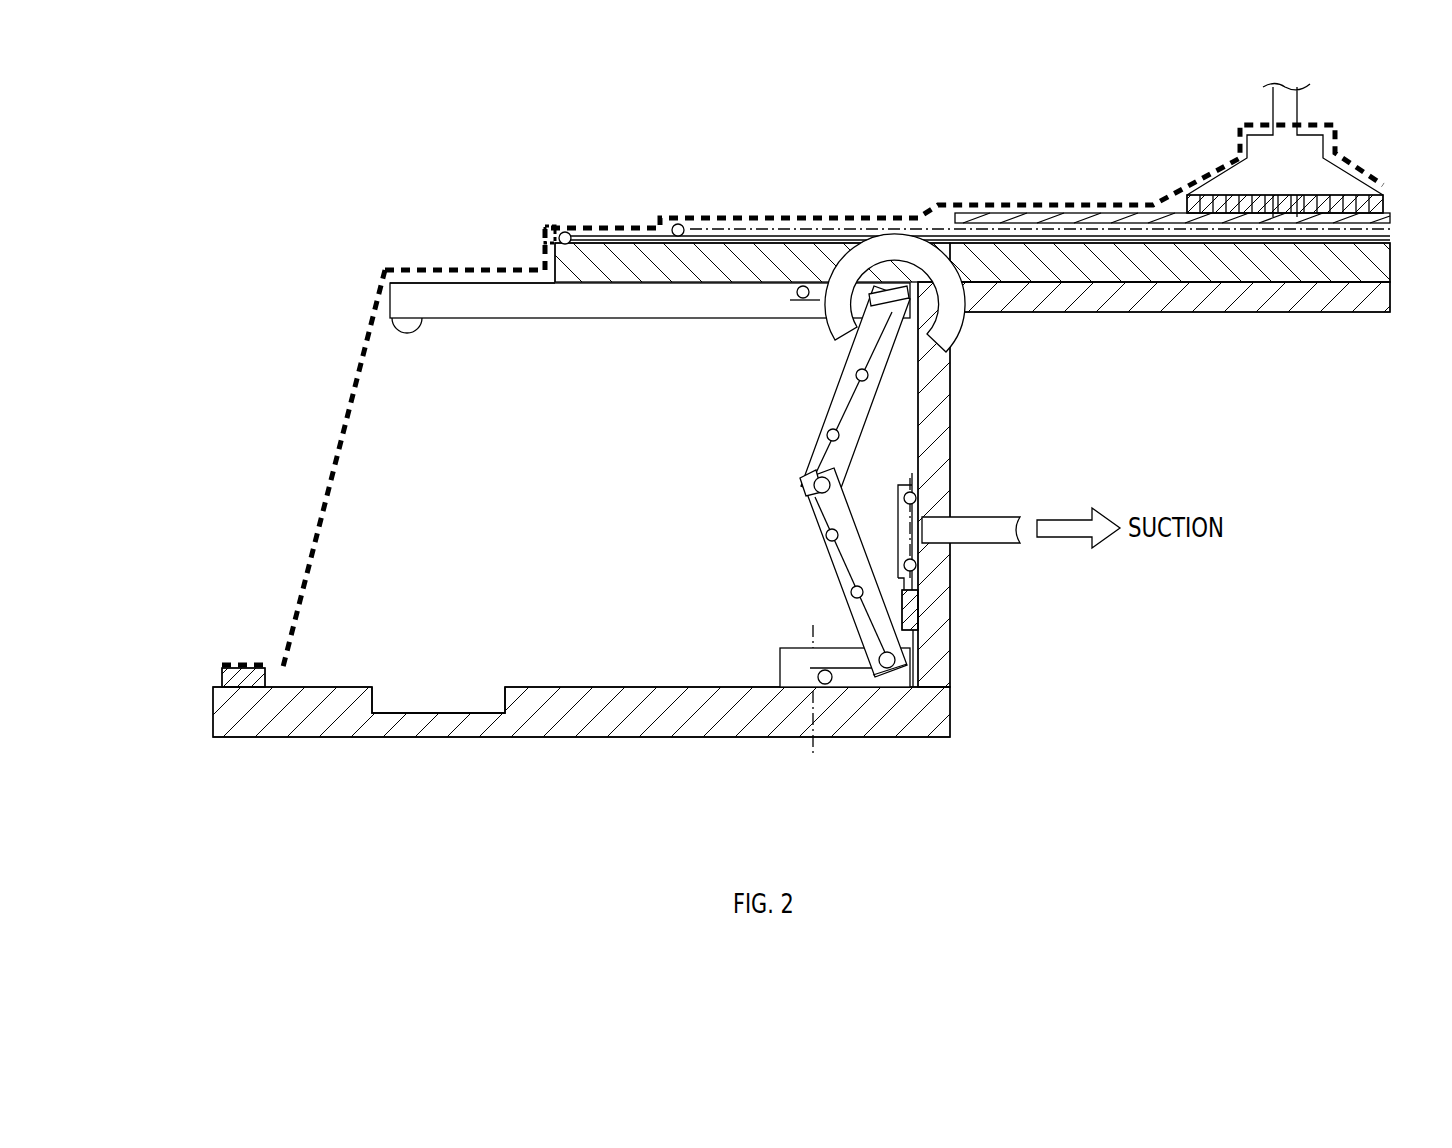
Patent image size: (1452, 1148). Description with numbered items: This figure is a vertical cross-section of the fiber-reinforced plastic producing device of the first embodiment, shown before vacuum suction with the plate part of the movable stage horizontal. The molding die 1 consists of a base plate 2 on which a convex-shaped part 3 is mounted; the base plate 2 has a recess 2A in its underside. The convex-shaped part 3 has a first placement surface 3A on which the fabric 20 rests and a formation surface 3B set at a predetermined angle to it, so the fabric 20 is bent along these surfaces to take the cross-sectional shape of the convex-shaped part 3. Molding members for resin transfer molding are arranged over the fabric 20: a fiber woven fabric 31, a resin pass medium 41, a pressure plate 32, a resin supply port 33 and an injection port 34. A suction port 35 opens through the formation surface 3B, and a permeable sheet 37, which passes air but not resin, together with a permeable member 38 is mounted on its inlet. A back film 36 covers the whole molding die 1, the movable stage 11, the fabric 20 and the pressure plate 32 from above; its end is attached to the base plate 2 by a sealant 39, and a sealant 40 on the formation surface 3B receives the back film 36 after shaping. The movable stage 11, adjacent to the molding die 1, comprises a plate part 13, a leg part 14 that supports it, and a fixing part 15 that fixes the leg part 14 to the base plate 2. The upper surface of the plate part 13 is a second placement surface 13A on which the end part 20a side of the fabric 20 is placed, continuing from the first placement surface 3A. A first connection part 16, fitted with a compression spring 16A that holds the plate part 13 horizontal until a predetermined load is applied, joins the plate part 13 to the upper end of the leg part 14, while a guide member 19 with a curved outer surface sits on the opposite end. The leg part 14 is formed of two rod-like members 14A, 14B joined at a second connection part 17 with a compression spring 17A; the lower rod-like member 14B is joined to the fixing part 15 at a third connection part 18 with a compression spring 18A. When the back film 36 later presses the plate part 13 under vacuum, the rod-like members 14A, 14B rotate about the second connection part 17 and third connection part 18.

The molding die 1 is at (1286, 425).
The base plate 2 is at (640, 738).
The recess 2A is at (440, 712).
The convex-shaped part 3 is at (1160, 295).
The first placement surface 3A is at (1355, 281).
The formation surface 3B is at (914, 416).
The movable stage 11 is at (712, 414).
The plate part 13 is at (583, 302).
The second placement surface 13A is at (462, 283).
The leg part 14 is at (815, 578).
The rod-like member 14A is at (837, 394).
The rod-like member 14B is at (811, 531).
The fixing part 15 is at (800, 648).
The first connection part 16 is at (888, 316).
The compression spring 16A is at (856, 352).
The second connection part 17 is at (811, 487).
The compression spring 17A is at (806, 477).
The third connection part 18 is at (893, 668).
The compression spring 18A is at (875, 642).
The guide member 19 is at (407, 336).
The fabric 20 is at (622, 262).
The end part 20a is at (549, 243).
The fiber woven fabric 31 is at (584, 236).
The pressure plate 32 is at (1072, 213).
The resin supply port 33 is at (1233, 195).
The injection port 34 is at (1343, 183).
The suction port 35 is at (970, 543).
The back film 36 is at (715, 216).
The permeable sheet 37 is at (897, 537).
The permeable member 38 is at (914, 510).
The sealant 39 is at (222, 676).
The sealant 40 is at (912, 610).
The resin pass medium 41 is at (803, 229).